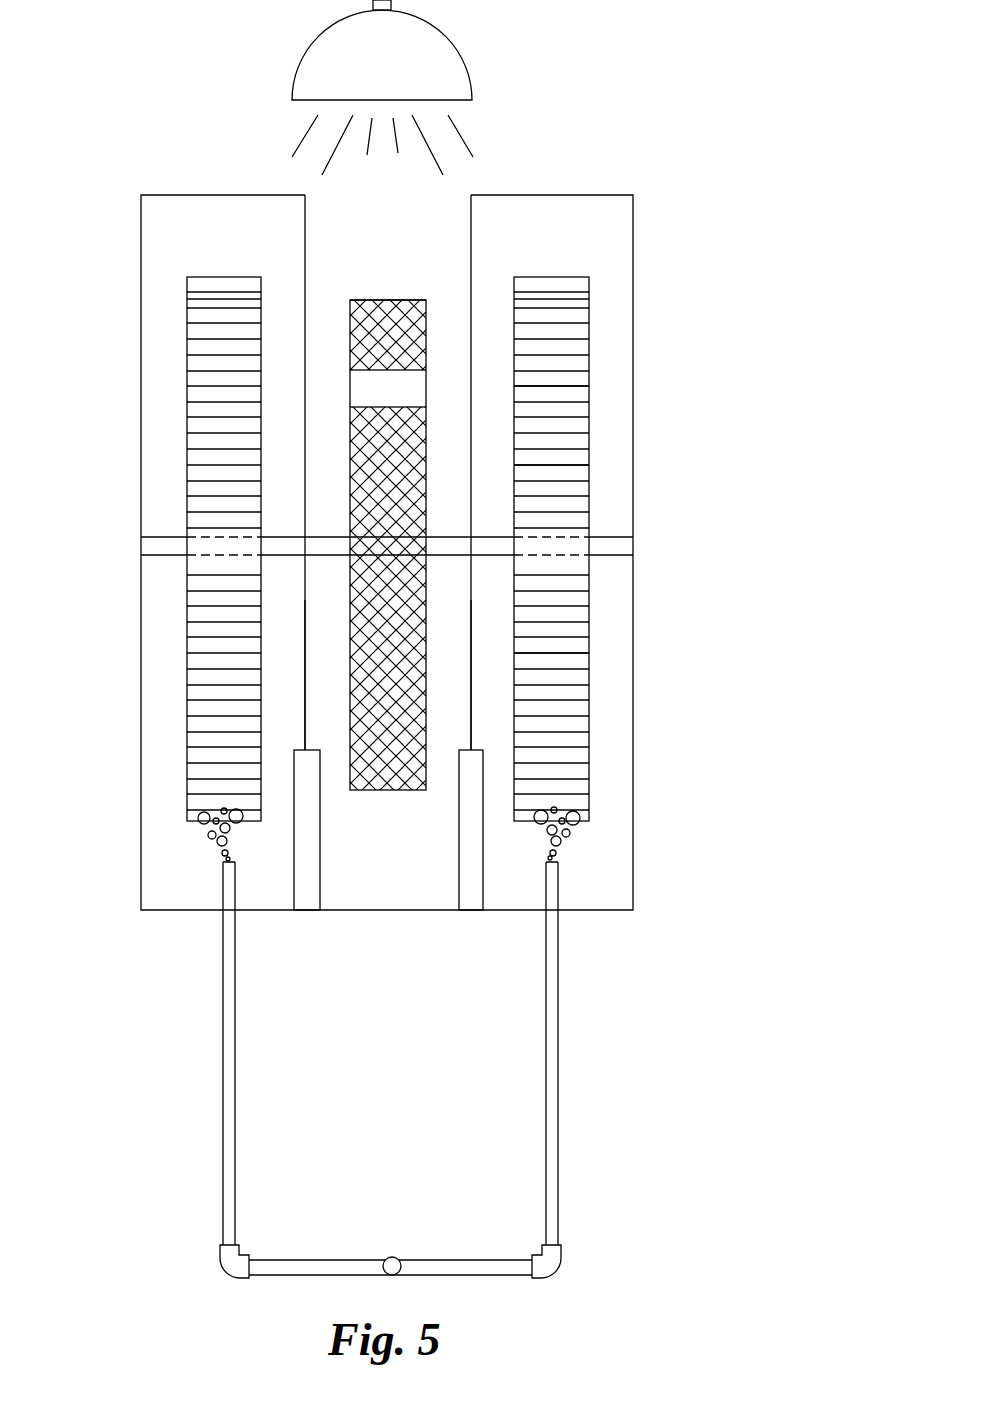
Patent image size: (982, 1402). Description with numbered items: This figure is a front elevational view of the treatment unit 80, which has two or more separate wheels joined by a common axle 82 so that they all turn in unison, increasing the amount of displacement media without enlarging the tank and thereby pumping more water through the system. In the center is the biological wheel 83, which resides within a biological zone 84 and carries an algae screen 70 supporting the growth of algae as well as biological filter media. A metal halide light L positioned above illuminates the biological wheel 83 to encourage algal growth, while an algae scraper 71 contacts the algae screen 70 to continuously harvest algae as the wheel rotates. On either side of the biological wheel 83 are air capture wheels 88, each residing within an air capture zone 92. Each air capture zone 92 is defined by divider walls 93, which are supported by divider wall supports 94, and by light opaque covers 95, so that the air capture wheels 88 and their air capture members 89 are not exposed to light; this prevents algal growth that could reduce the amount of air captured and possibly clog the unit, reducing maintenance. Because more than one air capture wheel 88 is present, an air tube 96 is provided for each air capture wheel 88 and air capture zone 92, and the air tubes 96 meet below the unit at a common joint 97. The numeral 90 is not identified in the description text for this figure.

The metal halide light L is at (450, 38).
The treatment unit 80 is at (680, 176).
The axle 82 is at (613, 545).
The biological wheel 83 is at (388, 300).
The biological zone 84 is at (394, 214).
The air capture wheel 88 is at (187, 278).
The air capture member 89 is at (589, 382).
The stack layer 90 is at (555, 472).
The air capture zone 92 is at (231, 252).
The divider wall 93 is at (308, 653).
The divider wall support 94 is at (320, 833).
The light opaque cover 95 is at (228, 195).
The air tube 96 is at (236, 1082).
The common joint 97 is at (395, 1257).
The algae screen 70 is at (407, 320).
The algae scraper 71 is at (365, 392).